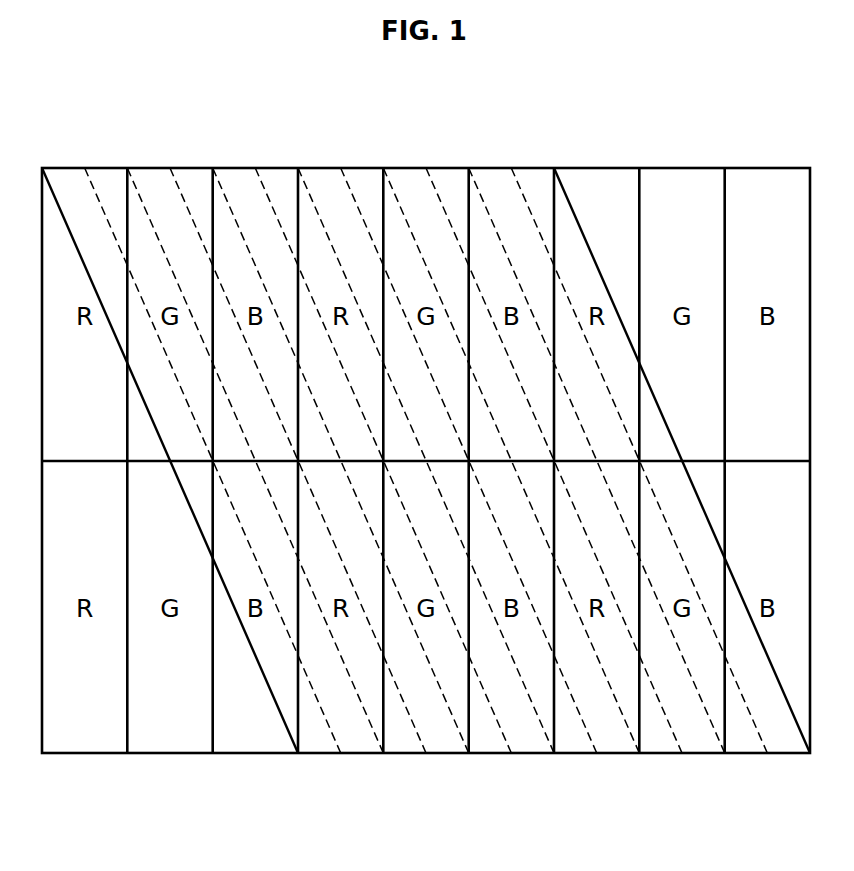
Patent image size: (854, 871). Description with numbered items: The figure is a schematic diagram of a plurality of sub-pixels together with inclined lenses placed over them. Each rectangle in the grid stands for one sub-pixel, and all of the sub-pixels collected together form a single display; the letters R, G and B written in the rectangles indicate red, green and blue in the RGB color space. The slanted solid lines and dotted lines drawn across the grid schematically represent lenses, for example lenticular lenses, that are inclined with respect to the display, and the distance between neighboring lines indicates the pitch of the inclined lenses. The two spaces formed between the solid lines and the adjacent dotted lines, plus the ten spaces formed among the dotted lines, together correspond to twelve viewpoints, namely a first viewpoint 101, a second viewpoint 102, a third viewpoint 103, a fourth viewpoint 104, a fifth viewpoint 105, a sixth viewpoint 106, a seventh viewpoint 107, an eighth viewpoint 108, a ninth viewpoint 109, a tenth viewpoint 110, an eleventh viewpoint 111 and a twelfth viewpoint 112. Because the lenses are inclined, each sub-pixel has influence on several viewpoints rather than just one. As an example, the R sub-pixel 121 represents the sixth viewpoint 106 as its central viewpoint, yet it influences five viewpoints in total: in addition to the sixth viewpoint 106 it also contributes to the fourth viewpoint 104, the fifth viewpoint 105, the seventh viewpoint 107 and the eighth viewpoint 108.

The R sub-pixel 121 is at (318, 167).
The first viewpoint 101 is at (322, 755).
The second viewpoint 102 is at (364, 755).
The third viewpoint 103 is at (407, 755).
The fourth viewpoint 104 is at (450, 755).
The fifth viewpoint 105 is at (492, 755).
The sixth viewpoint 106 is at (535, 755).
The seventh viewpoint 107 is at (578, 755).
The eighth viewpoint 108 is at (620, 755).
The ninth viewpoint 109 is at (663, 755).
The tenth viewpoint 110 is at (706, 755).
The eleventh viewpoint 111 is at (748, 755).
The twelfth viewpoint 112 is at (791, 755).